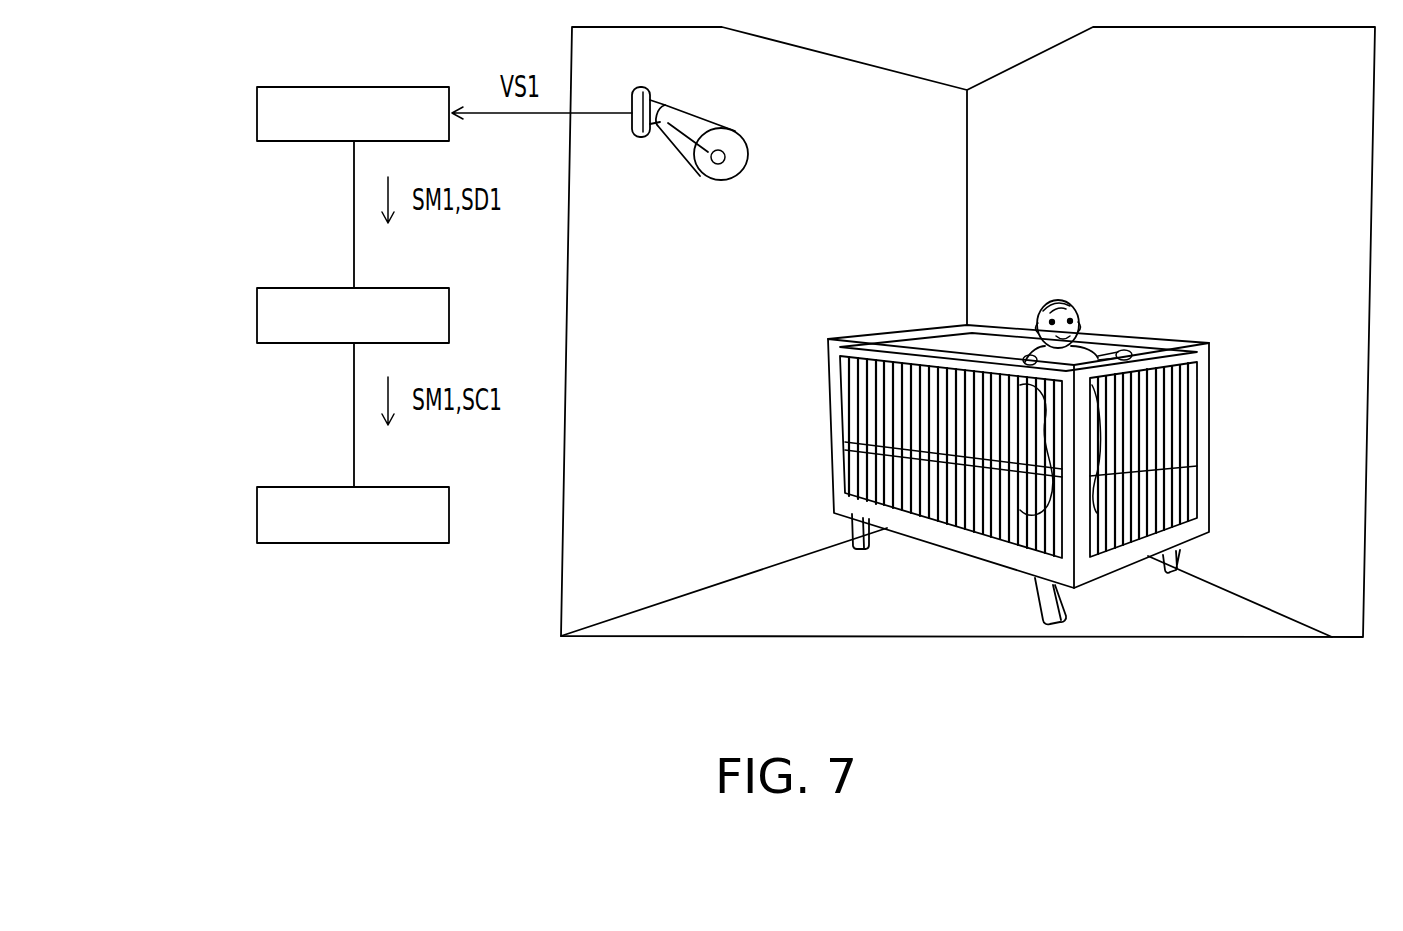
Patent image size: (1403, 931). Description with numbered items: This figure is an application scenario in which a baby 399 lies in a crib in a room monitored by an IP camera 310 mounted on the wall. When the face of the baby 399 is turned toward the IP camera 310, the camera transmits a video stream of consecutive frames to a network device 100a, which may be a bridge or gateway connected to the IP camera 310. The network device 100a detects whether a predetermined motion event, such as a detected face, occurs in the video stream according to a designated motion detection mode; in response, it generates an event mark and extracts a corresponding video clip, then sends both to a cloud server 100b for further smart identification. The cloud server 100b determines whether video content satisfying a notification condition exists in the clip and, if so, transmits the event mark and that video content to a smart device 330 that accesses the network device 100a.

The network device 100a is at (257, 113).
The cloud server 100b is at (257, 313).
The smart device 330 is at (257, 513).
The IP camera 310 is at (672, 152).
The baby 399 is at (1068, 298).